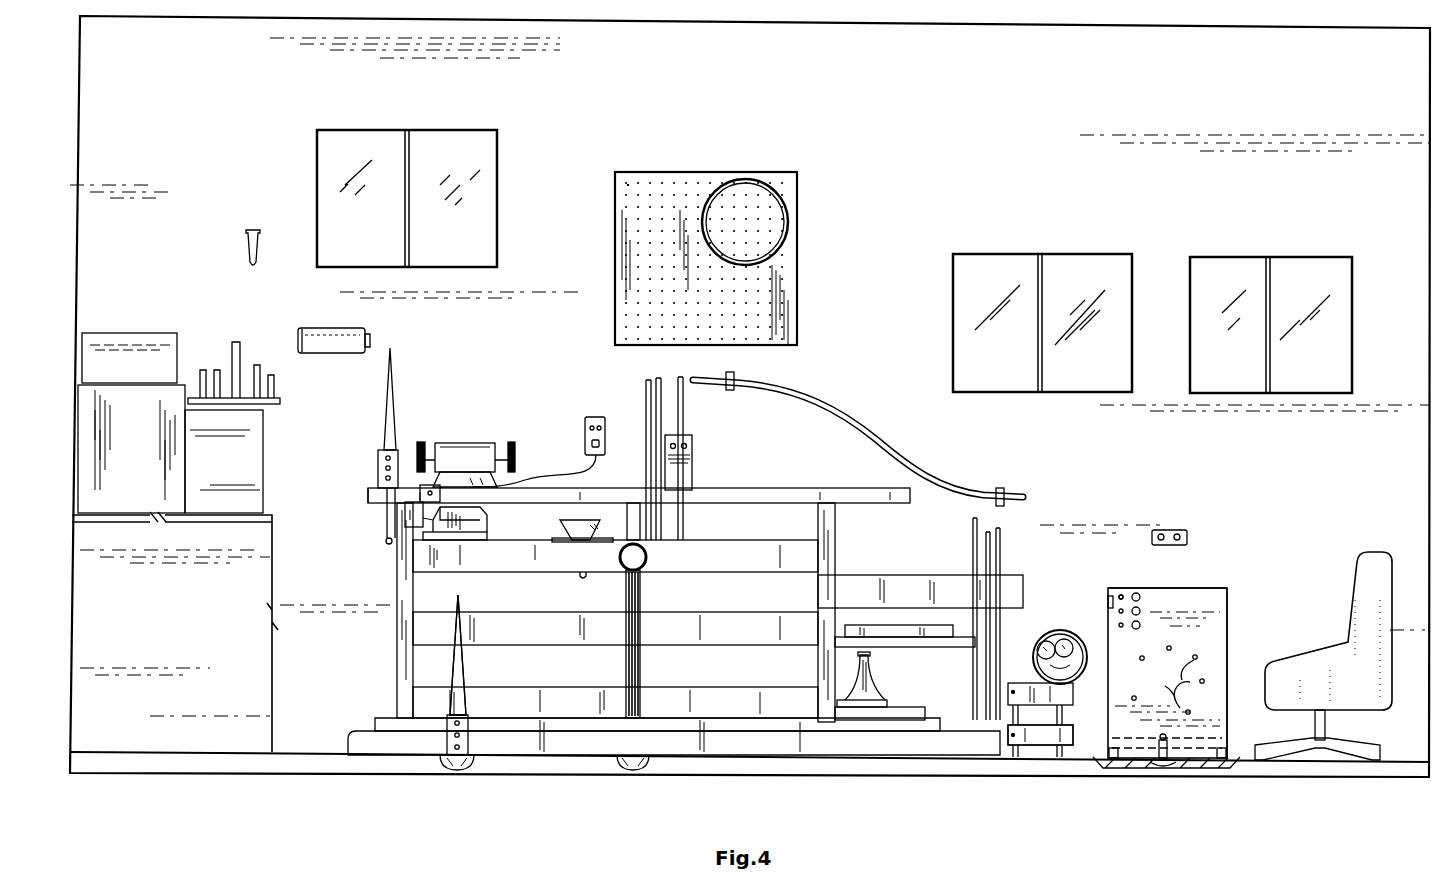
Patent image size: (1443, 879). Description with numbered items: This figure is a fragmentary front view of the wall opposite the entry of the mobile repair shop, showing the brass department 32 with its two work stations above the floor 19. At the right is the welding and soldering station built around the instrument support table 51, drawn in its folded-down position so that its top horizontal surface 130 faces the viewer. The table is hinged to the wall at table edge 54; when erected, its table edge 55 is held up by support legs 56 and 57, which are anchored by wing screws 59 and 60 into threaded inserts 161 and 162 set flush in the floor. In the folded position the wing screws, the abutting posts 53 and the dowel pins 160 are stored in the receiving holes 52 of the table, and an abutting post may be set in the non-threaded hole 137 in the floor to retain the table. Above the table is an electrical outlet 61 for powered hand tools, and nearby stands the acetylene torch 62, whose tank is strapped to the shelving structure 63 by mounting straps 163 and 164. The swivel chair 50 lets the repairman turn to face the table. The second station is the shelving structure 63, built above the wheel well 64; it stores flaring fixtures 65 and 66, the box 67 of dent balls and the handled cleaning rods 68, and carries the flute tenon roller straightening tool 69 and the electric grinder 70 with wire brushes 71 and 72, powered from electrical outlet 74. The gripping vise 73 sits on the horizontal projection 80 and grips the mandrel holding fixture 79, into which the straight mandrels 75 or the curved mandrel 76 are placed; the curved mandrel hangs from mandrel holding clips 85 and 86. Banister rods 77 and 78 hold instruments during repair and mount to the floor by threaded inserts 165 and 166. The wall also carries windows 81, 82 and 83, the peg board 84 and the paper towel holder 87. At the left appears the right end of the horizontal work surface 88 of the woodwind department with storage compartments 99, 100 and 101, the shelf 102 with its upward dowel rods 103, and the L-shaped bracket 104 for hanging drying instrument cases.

The floor 19 is at (862, 766).
The brass department 32 is at (1308, 12).
The swivel chair 50 is at (1384, 555).
The instrument support table 51 is at (1227, 608).
The receiving holes 52 is at (1140, 695).
The abutting posts 53 is at (1141, 599).
The table edge 54 is at (1225, 586).
The table edge 55 is at (1205, 770).
The support leg 56 is at (1146, 757).
The support leg 57 is at (1210, 742).
The wing screw 59 is at (1110, 598).
The wing screw 60 is at (1110, 611).
The electrical outlet 61 is at (1188, 538).
The acetylene torch 62 is at (1051, 645).
The shelving structure 63 is at (820, 492).
The wheel well 64 is at (568, 768).
The flaring fixture 65 is at (580, 577).
The flaring fixture 66 is at (870, 682).
The box 67 is at (905, 630).
The handled cleaning rods 68 is at (642, 590).
The flute tenon roller straightening tool 69 is at (693, 457).
The electric grinder 70 is at (470, 442).
The wire brush 71 is at (421, 441).
The wire brush 72 is at (512, 441).
The gripping vise 73 is at (385, 541).
The electrical outlet 74 is at (584, 432).
The straight mandrels 75 is at (650, 425).
The curved mandrel 76 is at (890, 453).
The banister rod 77 is at (395, 380).
The banister rod 78 is at (459, 665).
The mandrel holding fixture 79 is at (370, 489).
The horizontal projection 80 is at (432, 541).
The window 81 is at (1250, 286).
The window 82 is at (1082, 278).
The window 83 is at (482, 148).
The peg board 84 is at (700, 186).
The mandrel holding clip 85 is at (736, 373).
The mandrel holding clip 86 is at (1000, 487).
The paper towel holder 87 is at (367, 332).
The horizontal work surface 88 is at (164, 630).
The storage compartment 99 is at (264, 456).
The storage compartment 100 is at (178, 398).
The storage compartment 101 is at (141, 340).
The shelf 102 is at (283, 400).
The dowel rods 103 is at (255, 362).
The L-shaped bracket 104 is at (246, 240).
The top horizontal surface 130 is at (1220, 680).
The non-threaded hole 137 is at (1165, 760).
The dowel pins 160 is at (1123, 594).
The threaded insert 161 is at (1227, 770).
The threaded insert 162 is at (1110, 770).
The mounting strap 163 is at (1055, 735).
The mounting strap 164 is at (1074, 696).
The threaded insert 165 is at (458, 768).
The threaded insert 166 is at (628, 768).